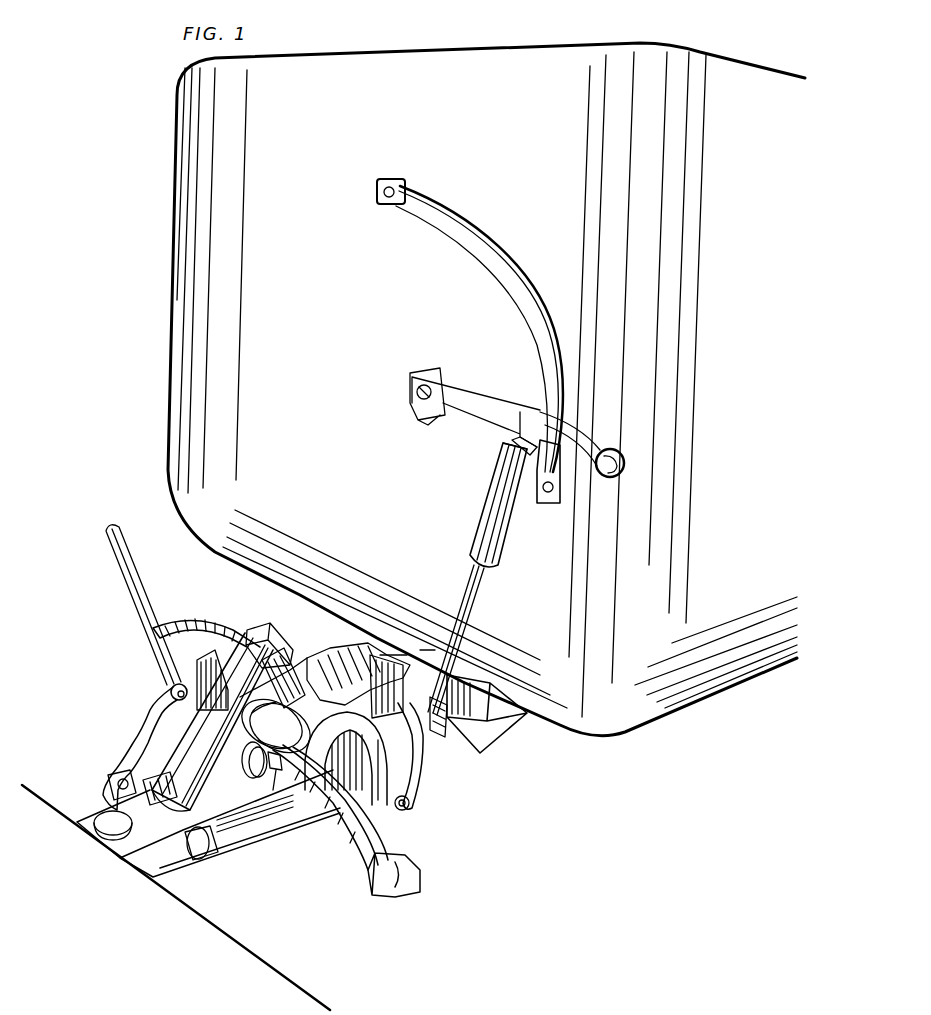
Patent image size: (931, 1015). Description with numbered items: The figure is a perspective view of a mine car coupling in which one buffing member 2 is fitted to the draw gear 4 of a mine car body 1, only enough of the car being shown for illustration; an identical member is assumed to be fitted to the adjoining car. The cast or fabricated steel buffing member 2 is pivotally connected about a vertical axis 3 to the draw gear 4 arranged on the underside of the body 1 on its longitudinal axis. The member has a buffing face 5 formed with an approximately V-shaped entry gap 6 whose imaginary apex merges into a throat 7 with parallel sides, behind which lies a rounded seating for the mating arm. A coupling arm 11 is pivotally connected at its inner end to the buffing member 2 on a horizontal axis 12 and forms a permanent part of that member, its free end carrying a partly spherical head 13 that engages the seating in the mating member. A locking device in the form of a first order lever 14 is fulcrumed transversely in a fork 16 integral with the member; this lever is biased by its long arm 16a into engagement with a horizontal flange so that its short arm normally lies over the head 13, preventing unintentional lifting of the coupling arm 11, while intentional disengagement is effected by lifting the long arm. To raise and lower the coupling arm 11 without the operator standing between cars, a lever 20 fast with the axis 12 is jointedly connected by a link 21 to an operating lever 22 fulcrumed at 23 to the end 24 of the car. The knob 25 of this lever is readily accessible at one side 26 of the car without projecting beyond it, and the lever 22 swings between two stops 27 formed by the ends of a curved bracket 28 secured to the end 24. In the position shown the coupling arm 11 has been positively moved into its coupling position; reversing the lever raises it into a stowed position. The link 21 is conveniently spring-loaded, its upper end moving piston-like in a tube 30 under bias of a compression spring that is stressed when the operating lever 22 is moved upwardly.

The mine car body 1 is at (162, 332).
The buffing member 2 is at (323, 668).
The vertical axis 3 is at (108, 826).
The draw gear 4 is at (488, 743).
The buffing face 5 is at (378, 798).
The V-shaped entry gap 6 is at (200, 662).
The throat 7 is at (264, 648).
The coupling arm 11 is at (205, 728).
The horizontal axis 12 is at (106, 779).
The partly spherical head 13 is at (245, 633).
The first order lever 14 is at (164, 622).
The fork 16 is at (325, 724).
The long arm 16a is at (395, 850).
The lever 20 is at (155, 700).
The link 21 is at (470, 592).
The operating lever 22 is at (478, 413).
The fulcrum 23 is at (415, 396).
The end of the mine car 24 is at (349, 302).
The knob 25 is at (617, 452).
The side of the mine car 26 is at (769, 359).
The stops 27 is at (392, 198).
The curved bracket 28 is at (466, 230).
The tube 30 is at (490, 489).